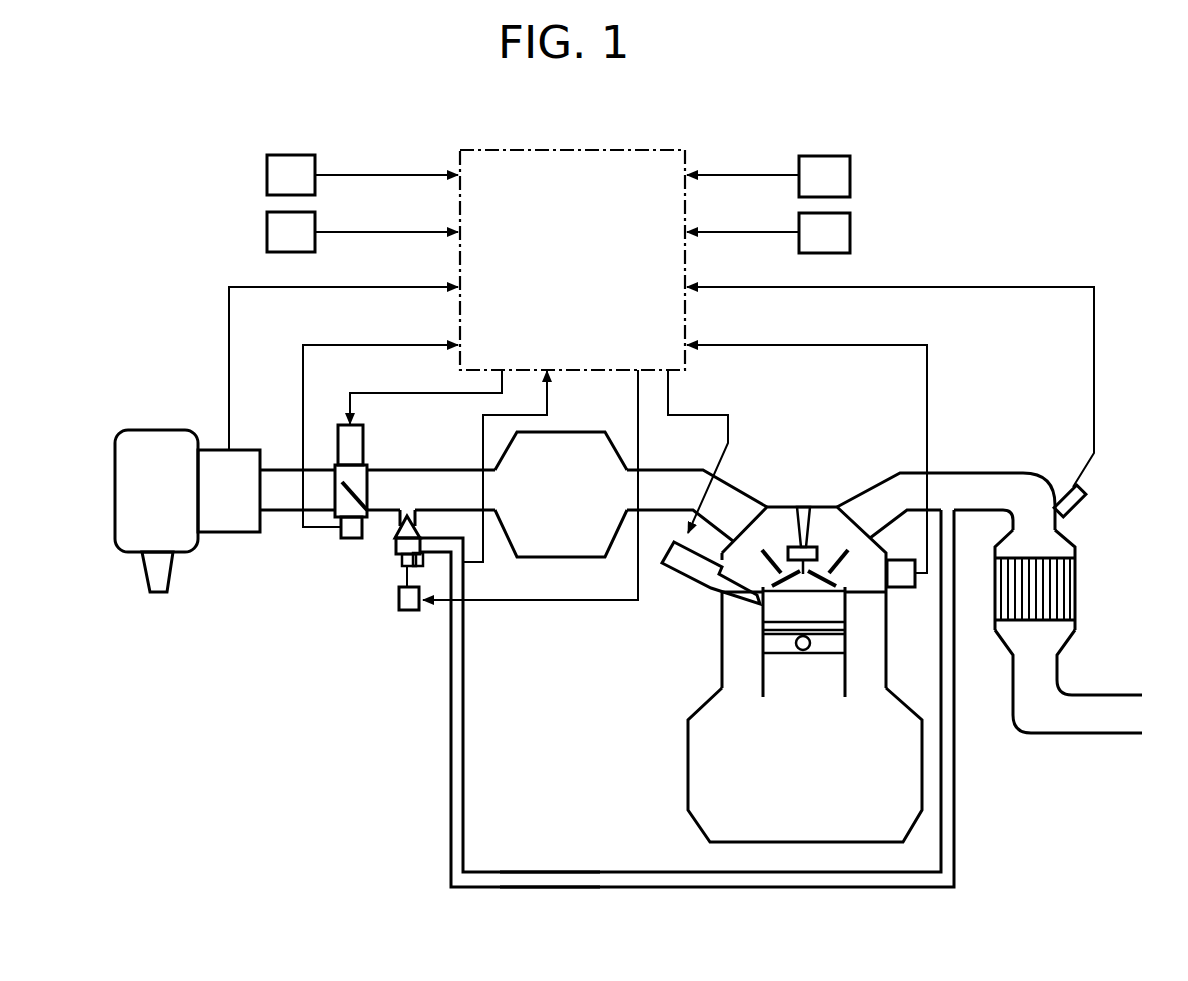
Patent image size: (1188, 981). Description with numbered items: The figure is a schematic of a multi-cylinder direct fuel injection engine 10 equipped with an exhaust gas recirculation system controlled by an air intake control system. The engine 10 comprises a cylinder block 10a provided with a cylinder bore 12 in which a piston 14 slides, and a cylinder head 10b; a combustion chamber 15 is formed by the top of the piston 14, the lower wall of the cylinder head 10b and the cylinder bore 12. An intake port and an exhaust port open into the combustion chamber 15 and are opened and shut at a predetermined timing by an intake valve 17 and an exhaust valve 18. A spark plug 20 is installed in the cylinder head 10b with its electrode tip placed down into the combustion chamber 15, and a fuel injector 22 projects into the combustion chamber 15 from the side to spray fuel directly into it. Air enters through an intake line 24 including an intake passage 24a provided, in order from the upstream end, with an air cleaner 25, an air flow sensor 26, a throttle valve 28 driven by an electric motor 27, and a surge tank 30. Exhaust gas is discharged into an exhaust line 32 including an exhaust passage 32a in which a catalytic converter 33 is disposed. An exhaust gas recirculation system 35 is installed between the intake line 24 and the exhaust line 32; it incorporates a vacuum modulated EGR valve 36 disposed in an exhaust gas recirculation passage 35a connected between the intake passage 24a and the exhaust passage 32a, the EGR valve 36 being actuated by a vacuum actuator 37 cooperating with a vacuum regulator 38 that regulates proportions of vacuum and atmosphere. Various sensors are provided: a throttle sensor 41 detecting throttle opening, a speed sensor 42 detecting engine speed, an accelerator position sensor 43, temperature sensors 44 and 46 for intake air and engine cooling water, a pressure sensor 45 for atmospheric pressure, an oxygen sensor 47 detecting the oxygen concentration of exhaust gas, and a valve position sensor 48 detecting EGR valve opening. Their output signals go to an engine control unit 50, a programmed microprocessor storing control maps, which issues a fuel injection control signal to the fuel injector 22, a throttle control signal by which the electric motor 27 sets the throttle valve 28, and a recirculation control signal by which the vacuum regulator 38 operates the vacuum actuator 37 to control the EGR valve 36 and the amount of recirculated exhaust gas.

The direct fuel injection engine 10 is at (703, 683).
The cylinder block 10a is at (687, 787).
The cylinder head 10b is at (853, 520).
The cylinder bore 12 is at (842, 680).
The piston 14 is at (833, 648).
The combustion chamber 15 is at (817, 587).
The intake valve 17 is at (778, 530).
The exhaust valve 18 is at (843, 550).
The spark plug 20 is at (803, 505).
The fuel injector 22 is at (694, 588).
The intake line 24 is at (288, 450).
The intake passage 24a is at (430, 470).
The air cleaner 25 is at (132, 430).
The air flow sensor 26 is at (243, 532).
The electric motor 27 is at (343, 418).
The throttle valve 28 is at (367, 505).
The surge tank 30 is at (567, 557).
The exhaust line 32 is at (1090, 510).
The exhaust passage 32a is at (973, 472).
The catalytic converter 33 is at (1077, 603).
The exhaust gas recirculation system 35 is at (478, 660).
The exhaust gas recirculation passage 35a is at (547, 872).
The EGR valve 36 is at (397, 540).
The vacuum actuator 37 is at (402, 560).
The vacuum regulator 38 is at (400, 608).
The throttle sensor 41 is at (341, 535).
The speed sensor 42 is at (850, 168).
The accelerator position sensor 43 is at (850, 230).
The temperature sensor 44 is at (267, 170).
The pressure sensor 45 is at (267, 232).
The temperature sensor 46 is at (915, 583).
The oxygen sensor 47 is at (1065, 487).
The valve position sensor 48 is at (425, 562).
The engine control unit 50 is at (603, 147).